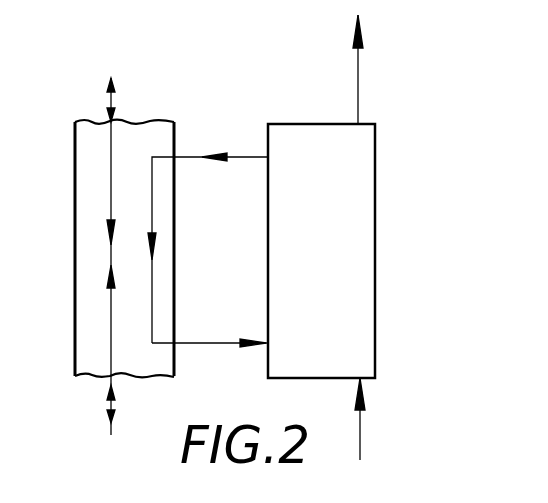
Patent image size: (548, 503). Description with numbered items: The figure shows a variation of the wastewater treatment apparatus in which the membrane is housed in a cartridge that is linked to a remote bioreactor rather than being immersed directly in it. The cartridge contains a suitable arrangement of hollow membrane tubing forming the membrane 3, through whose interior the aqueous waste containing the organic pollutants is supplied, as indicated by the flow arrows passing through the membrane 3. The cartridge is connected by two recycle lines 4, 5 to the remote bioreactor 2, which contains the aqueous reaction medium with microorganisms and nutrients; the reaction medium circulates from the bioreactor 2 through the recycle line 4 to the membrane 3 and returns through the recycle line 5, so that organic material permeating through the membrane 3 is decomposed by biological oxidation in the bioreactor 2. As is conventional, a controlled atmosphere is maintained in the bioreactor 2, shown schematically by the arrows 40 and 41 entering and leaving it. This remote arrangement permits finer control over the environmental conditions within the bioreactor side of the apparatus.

The bioreactor 2 is at (308, 137).
The membrane 3 is at (88, 157).
The recycle line 4 is at (191, 157).
The recycle line 5 is at (185, 343).
The arrow 40 is at (360, 428).
The arrow 41 is at (358, 78).